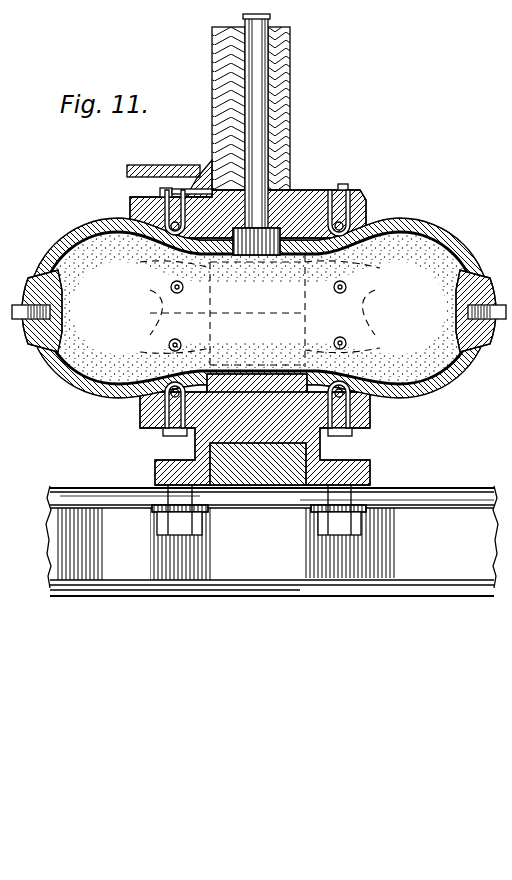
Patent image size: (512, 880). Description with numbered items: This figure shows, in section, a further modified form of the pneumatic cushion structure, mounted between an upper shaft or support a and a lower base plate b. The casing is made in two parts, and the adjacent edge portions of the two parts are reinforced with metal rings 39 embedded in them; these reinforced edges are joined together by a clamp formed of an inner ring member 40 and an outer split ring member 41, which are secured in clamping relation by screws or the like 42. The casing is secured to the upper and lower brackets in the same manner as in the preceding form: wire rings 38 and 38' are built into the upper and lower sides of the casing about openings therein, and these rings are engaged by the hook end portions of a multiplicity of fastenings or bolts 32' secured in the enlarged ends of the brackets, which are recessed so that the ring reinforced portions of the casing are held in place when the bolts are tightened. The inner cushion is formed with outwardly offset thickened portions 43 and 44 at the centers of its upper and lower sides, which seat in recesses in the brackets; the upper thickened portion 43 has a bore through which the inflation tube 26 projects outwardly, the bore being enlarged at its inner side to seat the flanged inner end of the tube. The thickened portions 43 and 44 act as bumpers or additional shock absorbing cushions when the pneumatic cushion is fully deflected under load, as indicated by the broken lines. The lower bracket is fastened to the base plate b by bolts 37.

The shaft a is at (213, 50).
The base plate b is at (278, 572).
The stem 26 is at (254, 124).
The fastenings or bolts 32' is at (232, 323).
The wire rings 38 is at (219, 213).
The lower U-clips 38' is at (246, 425).
The outwardly offset thickened portion 44 is at (218, 172).
The outwardly offset thickened portion 43 is at (233, 257).
The metal rings 39 is at (50, 330).
The inner ring member 40 is at (470, 330).
The outer split ring member 41 is at (465, 296).
The screws 42 is at (455, 300).
The bolts 37 is at (182, 528).